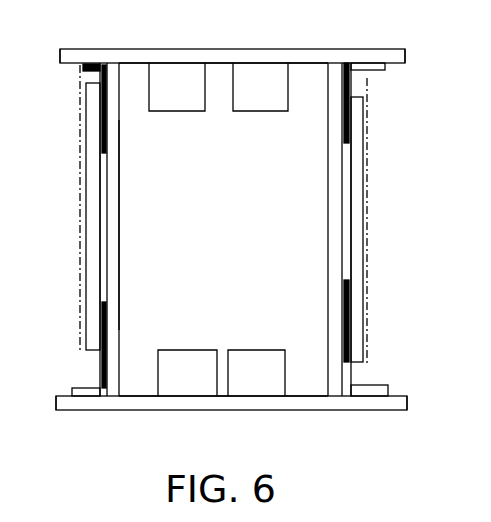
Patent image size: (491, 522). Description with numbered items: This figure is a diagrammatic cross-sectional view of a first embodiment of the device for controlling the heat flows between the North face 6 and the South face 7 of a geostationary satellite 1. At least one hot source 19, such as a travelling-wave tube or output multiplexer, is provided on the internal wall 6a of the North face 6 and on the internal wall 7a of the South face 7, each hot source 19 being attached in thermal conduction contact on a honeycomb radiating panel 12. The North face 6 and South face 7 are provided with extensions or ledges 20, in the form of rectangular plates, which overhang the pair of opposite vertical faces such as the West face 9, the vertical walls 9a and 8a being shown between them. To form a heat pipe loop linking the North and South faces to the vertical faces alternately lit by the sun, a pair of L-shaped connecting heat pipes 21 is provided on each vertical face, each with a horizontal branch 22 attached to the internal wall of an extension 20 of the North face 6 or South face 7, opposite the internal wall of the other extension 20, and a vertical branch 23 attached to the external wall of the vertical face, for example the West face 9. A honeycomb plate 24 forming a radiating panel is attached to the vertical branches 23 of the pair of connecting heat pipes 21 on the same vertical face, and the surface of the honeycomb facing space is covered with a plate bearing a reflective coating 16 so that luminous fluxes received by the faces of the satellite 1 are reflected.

The geostationary satellite 1 is at (422, 202).
The North face 6 is at (226, 56).
The internal wall of the North face 6a is at (220, 395).
The South face 7 is at (142, 404).
The internal wall of the South face 7a is at (208, 64).
The right side wall surface 8a is at (328, 204).
The West face 9 is at (118, 185).
The side wall surface 9a is at (121, 260).
The honeycomb radiating panel 12 is at (90, 335).
The reflective coating 16 is at (78, 276).
The hot source 19 is at (183, 102).
The extensions or ledges 20 is at (71, 56).
The connecting heat pipes 21 is at (84, 72).
The horizontal branch 22 is at (97, 66).
The vertical branch 23 is at (102, 130).
The honeycomb plate 24 is at (94, 201).